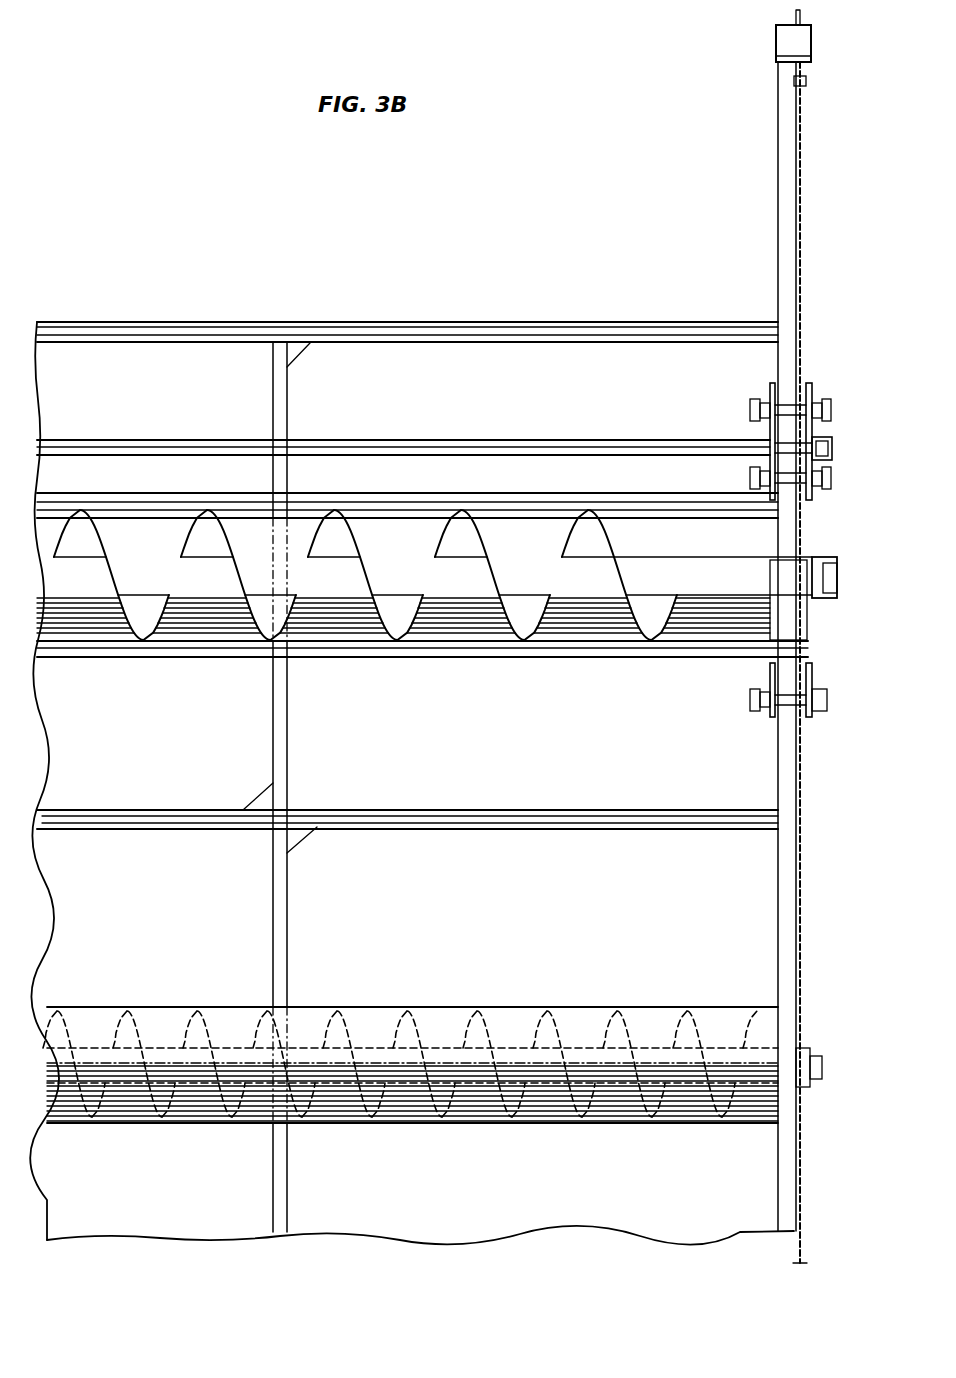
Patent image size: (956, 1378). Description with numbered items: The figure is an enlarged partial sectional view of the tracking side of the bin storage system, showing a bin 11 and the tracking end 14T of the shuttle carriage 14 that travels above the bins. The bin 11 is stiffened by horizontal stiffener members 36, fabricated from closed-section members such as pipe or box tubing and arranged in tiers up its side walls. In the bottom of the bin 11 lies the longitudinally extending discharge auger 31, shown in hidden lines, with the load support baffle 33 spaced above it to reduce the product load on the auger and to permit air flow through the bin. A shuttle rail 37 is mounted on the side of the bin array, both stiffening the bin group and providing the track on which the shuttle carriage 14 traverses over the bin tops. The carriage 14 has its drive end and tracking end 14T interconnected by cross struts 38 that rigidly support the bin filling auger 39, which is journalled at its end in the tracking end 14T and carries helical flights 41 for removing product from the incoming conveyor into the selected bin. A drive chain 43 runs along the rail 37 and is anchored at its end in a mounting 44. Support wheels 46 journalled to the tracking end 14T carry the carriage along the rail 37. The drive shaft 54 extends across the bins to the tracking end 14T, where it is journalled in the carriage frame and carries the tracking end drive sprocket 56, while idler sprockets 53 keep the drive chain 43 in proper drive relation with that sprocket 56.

The bin 11 is at (577, 321).
The shuttle carriage 14 is at (868, 388).
The tracking end 14T is at (824, 674).
The discharge auger 31 is at (125, 1010).
The load support baffle 33 is at (482, 1118).
The stiffener member 36 is at (333, 818).
The shuttle rail 37 is at (783, 176).
The cross strut 38 is at (437, 558).
The bin filling auger 39 is at (477, 541).
The flights 41 is at (338, 522).
The drive chain 43 is at (803, 110).
The mounting 44 is at (776, 46).
The support wheel 46 is at (786, 724).
The idler sprocket 53 is at (799, 372).
The drive shaft 54 is at (674, 418).
The tracking end drive sprocket 56 is at (833, 445).